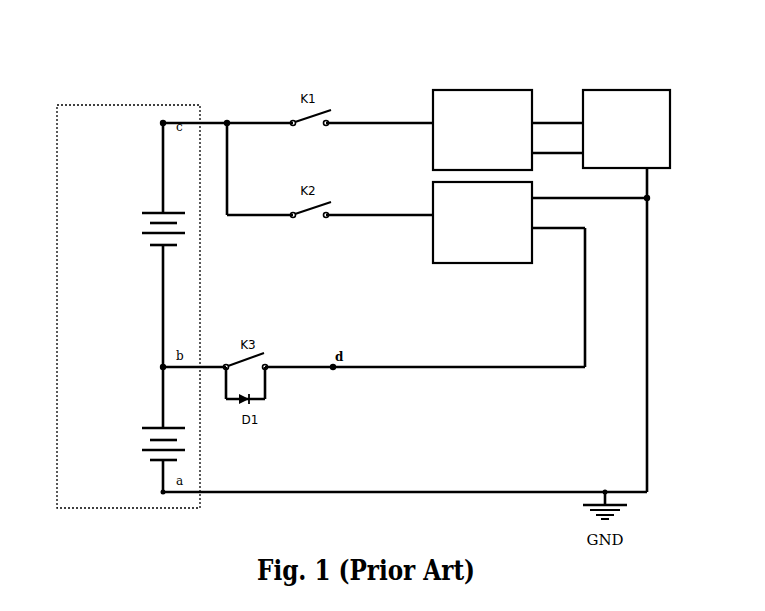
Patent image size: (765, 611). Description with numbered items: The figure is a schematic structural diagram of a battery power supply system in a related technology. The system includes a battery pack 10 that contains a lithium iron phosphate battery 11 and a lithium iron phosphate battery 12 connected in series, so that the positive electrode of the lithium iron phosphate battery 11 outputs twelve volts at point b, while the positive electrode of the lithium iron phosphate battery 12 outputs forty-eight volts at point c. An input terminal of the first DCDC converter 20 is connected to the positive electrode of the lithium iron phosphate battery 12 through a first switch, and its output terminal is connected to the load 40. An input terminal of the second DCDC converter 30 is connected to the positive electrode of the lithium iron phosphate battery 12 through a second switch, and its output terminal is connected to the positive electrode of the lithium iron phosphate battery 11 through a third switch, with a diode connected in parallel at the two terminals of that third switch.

The battery pack 10 is at (125, 104).
The lithium iron phosphate battery 11 is at (152, 427).
The lithium iron phosphate battery 12 is at (150, 212).
The first DCDC converter 20 is at (482, 130).
The second DCDC converter 30 is at (482, 222).
The load 40 is at (626, 129).